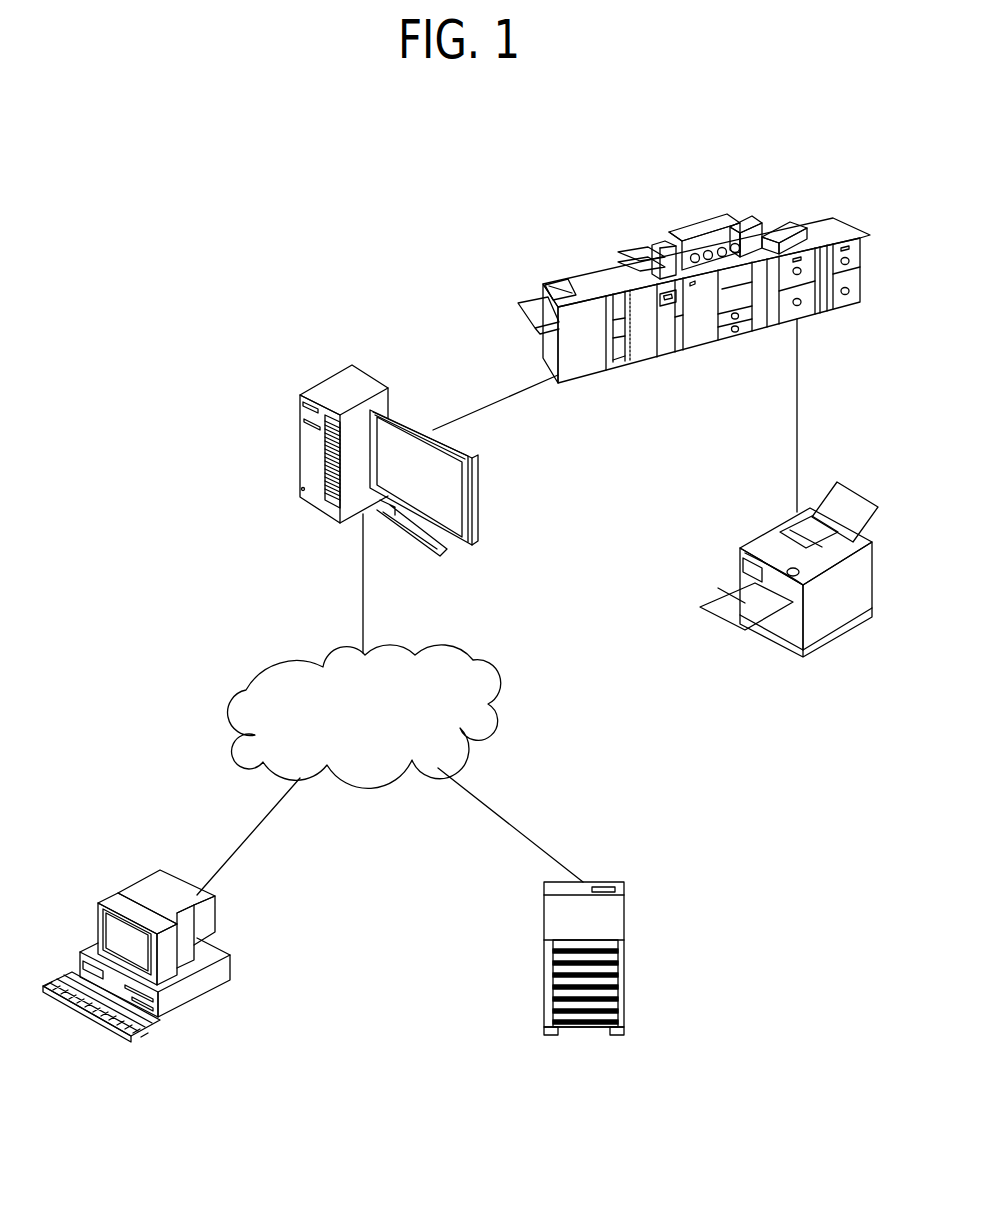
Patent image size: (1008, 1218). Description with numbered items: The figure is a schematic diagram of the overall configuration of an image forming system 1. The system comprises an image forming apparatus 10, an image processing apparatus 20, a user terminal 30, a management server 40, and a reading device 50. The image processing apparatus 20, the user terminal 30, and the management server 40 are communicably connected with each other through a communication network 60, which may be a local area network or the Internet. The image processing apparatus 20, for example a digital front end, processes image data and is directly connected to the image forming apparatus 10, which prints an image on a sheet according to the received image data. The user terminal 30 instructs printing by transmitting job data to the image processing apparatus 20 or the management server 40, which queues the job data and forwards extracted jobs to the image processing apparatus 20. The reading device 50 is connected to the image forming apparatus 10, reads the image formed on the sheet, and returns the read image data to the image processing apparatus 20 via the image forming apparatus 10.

The image forming system 1 is at (683, 168).
The image forming apparatus 10 is at (670, 398).
The image processing apparatus 20 is at (372, 375).
The user terminal 30 is at (203, 999).
The management server 40 is at (627, 988).
The reading device 50 is at (787, 658).
The communication network 60 is at (473, 659).